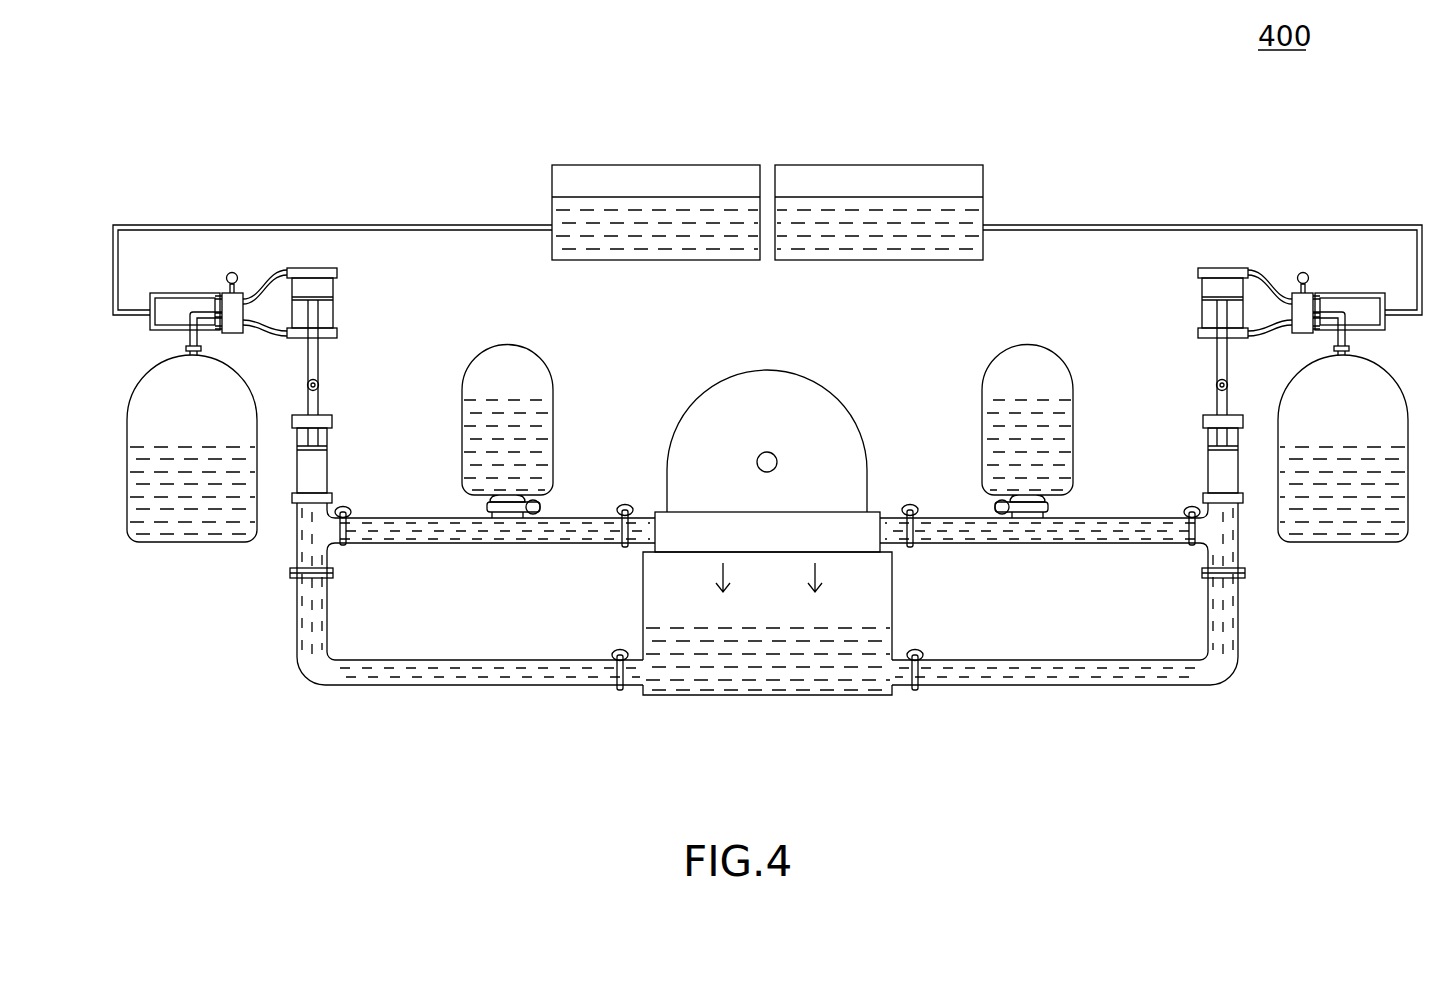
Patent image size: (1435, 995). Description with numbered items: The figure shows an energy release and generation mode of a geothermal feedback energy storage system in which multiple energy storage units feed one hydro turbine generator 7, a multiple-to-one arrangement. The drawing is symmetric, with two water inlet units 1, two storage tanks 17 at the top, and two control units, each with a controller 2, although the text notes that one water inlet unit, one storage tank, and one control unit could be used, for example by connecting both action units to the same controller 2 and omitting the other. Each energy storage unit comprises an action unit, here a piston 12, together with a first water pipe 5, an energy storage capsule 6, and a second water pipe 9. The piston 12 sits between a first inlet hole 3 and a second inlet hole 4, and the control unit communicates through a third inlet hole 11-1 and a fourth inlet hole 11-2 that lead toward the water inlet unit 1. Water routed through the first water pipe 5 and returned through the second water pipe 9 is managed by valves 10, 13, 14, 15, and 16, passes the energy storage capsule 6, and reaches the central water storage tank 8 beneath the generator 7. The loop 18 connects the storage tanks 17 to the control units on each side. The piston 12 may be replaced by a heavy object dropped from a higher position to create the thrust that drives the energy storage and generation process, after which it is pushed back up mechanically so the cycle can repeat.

The water inlet unit 1 is at (127, 493).
The controller 2 is at (233, 270).
The first inlet hole 3 is at (338, 276).
The second inlet hole 4 is at (338, 334).
The first water pipe 5 is at (420, 547).
The energy storage capsule 6 is at (548, 370).
The generator 7 is at (840, 398).
The water storage tank 8 is at (893, 590).
The second water pipe 9 is at (420, 688).
The valve 10 is at (290, 574).
The third inlet hole 11-1 is at (157, 293).
The fourth inlet hole 11-2 is at (172, 336).
The piston 12 is at (336, 299).
The valve 13 is at (348, 505).
The valve 14 is at (625, 500).
The valve 15 is at (545, 508).
The valve 16 is at (620, 647).
The another water storage tank 17 is at (697, 262).
The circulation pipe loop 18 is at (306, 225).